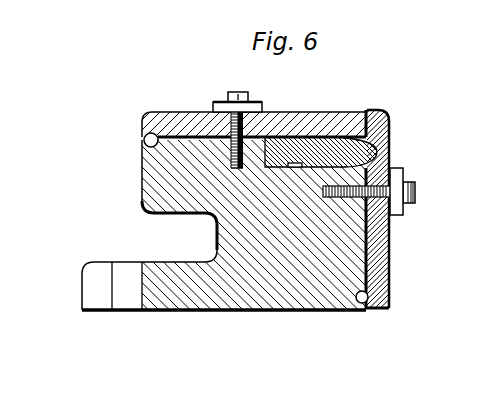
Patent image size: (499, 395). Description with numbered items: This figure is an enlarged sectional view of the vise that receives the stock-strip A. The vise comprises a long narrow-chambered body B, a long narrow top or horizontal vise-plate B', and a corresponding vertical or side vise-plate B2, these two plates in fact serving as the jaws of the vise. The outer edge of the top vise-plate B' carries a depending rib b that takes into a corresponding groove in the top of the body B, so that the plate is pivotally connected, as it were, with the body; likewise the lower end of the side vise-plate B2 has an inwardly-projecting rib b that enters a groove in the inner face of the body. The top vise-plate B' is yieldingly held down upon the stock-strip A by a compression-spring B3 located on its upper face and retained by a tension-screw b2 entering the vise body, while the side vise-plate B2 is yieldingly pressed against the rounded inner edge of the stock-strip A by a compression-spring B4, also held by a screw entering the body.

The stock-strip A is at (389, 134).
The vise body B is at (249, 224).
The top vise-plate B' is at (253, 111).
The side vise-plate B2 is at (391, 249).
The compression-spring B3 is at (218, 102).
The compression-spring B4 is at (404, 171).
The rib b is at (144, 140).
The tension-screw b2 is at (228, 90).